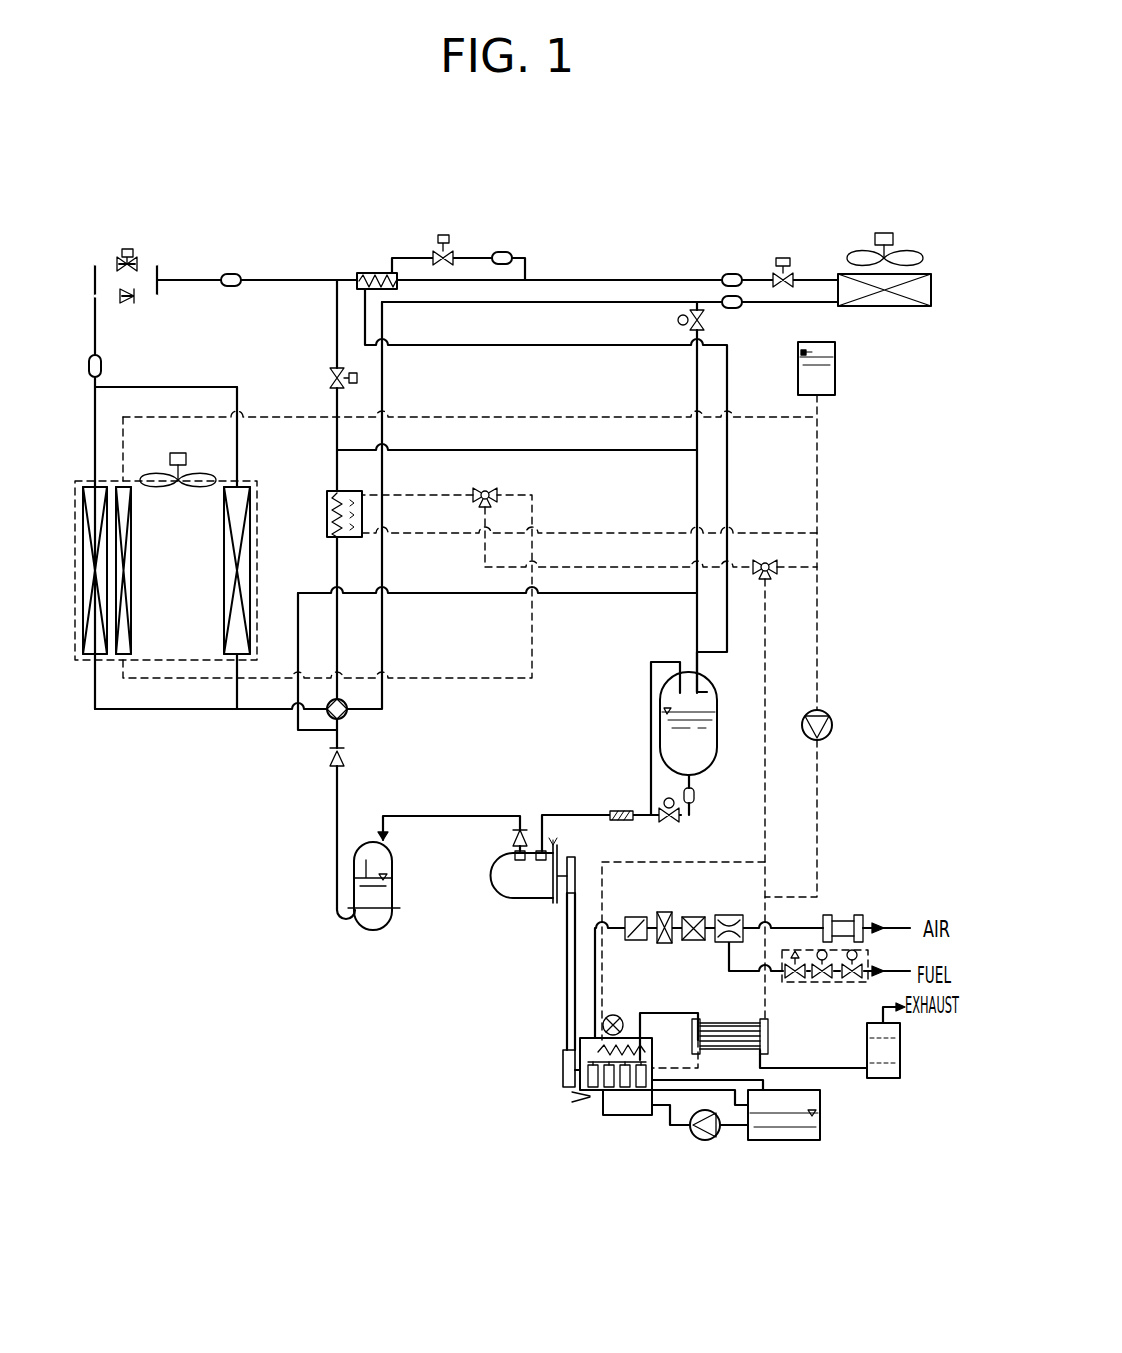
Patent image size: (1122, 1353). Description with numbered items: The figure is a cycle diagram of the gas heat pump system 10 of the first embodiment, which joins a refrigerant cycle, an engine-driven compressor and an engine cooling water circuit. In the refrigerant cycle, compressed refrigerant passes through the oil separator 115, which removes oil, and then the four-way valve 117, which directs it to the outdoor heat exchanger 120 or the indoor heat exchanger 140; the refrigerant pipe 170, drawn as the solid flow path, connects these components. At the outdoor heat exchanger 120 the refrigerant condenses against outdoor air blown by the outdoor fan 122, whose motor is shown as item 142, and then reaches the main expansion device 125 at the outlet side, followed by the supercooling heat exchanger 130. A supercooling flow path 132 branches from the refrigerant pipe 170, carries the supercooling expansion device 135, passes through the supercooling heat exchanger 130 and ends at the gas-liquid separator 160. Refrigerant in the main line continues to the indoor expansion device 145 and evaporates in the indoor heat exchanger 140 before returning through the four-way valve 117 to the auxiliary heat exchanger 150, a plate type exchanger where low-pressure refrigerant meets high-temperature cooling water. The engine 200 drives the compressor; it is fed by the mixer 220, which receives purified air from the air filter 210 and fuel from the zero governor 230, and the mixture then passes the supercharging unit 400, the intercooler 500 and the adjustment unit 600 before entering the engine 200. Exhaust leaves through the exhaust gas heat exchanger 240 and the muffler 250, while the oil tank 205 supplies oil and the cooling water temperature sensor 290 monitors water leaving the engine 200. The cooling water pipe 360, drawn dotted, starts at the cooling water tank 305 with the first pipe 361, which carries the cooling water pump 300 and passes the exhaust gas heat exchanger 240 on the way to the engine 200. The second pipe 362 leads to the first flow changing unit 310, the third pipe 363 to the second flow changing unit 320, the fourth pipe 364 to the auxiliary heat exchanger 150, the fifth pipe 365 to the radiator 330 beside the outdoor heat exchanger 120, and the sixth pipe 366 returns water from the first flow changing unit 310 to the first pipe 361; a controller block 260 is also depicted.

The gas heat pump system 10 is at (588, 202).
The oil separator 115 is at (354, 887).
The four-way valve 117 is at (347, 716).
The outdoor heat exchanger 120 is at (75, 575).
The outdoor fan 122 is at (170, 452).
The main expansion device 125 is at (134, 261).
The supercooling heat exchanger 130 is at (364, 272).
The supercooling flow path 132 is at (479, 256).
The supercooling expansion device 135 is at (449, 256).
The indoor heat exchanger 140 is at (885, 308).
The outdoor fan 142 is at (885, 232).
The indoor expansion device 145 is at (783, 266).
The auxiliary heat exchanger 150 is at (326, 513).
The gas-liquid separator 160 is at (660, 719).
The refrigerant pipe 170 is at (180, 711).
The engine 200 is at (615, 1116).
The oil tank 205 is at (783, 1140).
The air filter 210 is at (842, 914).
The mixer 220 is at (731, 914).
The zero governor 230 is at (868, 950).
The exhaust gas heat exchanger 240 is at (768, 1035).
The muffler 250 is at (883, 1079).
The control unit 260 is at (653, 1012).
The cooling water temperature sensor 290 is at (603, 1025).
The cooling water pump 300 is at (829, 712).
The cooling water tank 305 is at (836, 378).
The first flow changing unit 310 is at (766, 557).
The second flow changing unit 320 is at (490, 490).
The radiator 330 is at (131, 620).
The cooling water pipe 360 is at (651, 1110).
The first pipe 361 is at (819, 460).
The second pipe 362 is at (767, 600).
The third pipe 363 is at (575, 569).
The fourth pipe 364 is at (426, 494).
The fifth pipe 365 is at (455, 681).
The sixth pipe 366 is at (801, 568).
The supercharging unit 400 is at (696, 915).
The intercooler 500 is at (663, 911).
The adjustment unit 600 is at (632, 915).